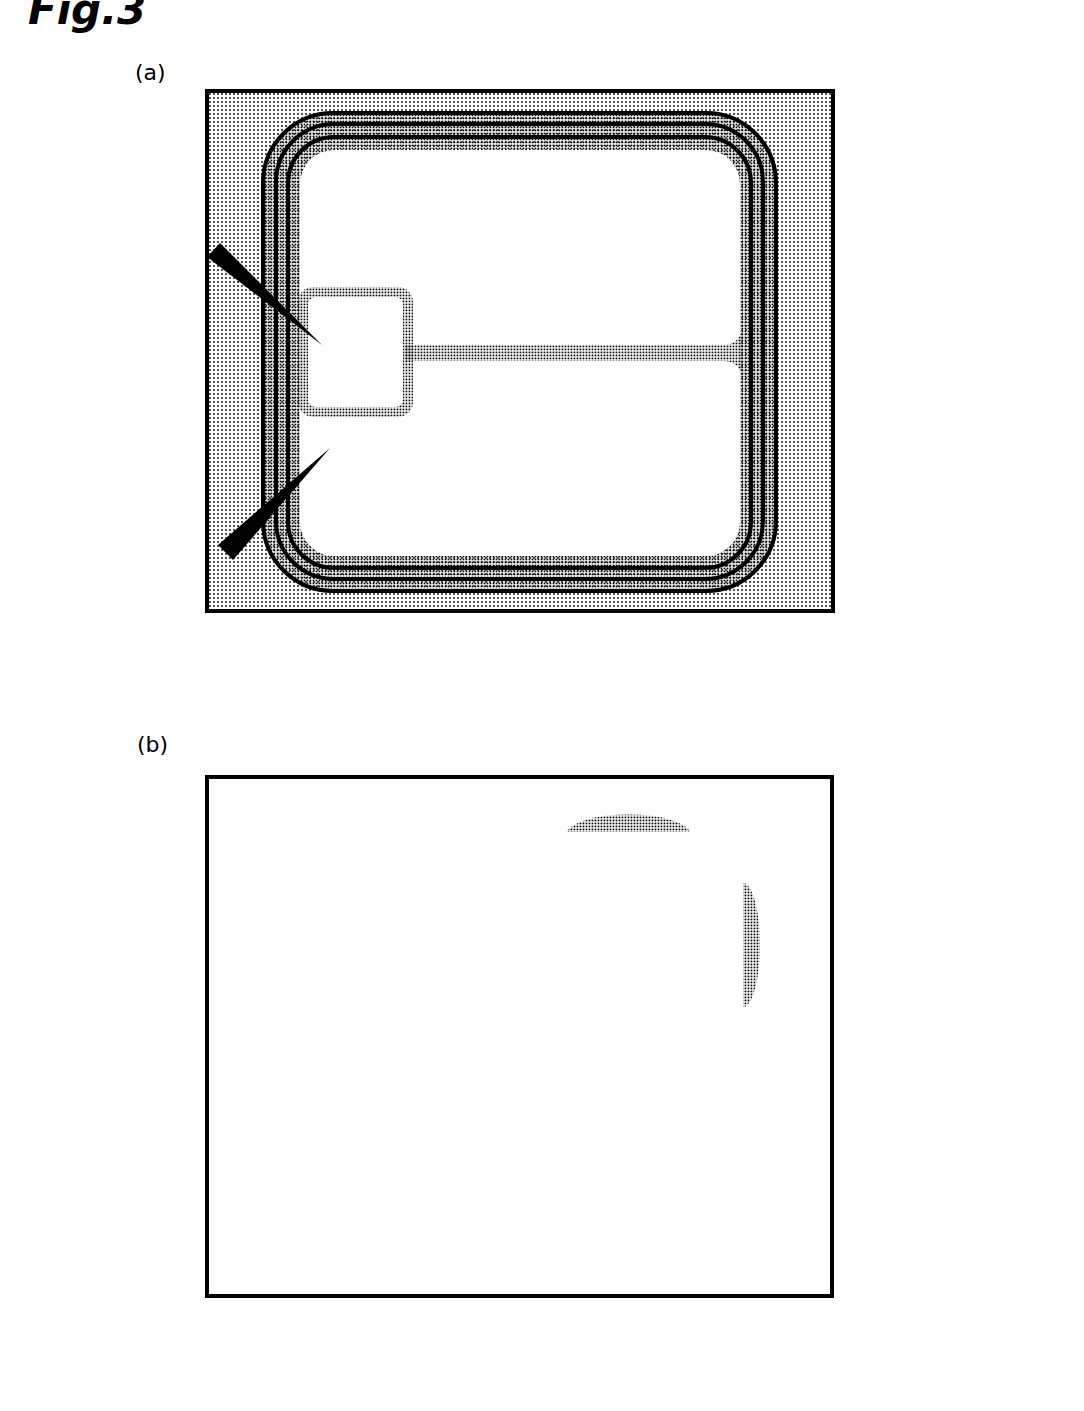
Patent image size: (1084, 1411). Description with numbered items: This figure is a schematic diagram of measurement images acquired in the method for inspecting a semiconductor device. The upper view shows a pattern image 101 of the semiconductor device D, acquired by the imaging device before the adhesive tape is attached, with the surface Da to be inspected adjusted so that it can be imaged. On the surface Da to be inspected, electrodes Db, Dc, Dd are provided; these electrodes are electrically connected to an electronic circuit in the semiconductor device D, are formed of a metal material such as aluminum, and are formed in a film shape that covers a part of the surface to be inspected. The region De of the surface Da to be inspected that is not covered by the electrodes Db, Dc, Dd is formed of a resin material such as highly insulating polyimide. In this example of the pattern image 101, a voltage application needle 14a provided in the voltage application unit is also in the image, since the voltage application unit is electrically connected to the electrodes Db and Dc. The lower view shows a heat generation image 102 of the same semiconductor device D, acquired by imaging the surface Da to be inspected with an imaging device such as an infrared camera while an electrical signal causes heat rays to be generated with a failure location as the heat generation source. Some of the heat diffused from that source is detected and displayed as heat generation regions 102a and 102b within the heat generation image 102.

The pattern image 101 is at (670, 87).
The heat generation image 102 is at (670, 774).
The heat generation region 102a is at (767, 951).
The heat generation region 102b is at (618, 806).
The voltage application needle 14a is at (226, 262).
The semiconductor device D is at (571, 693).
The surface to be inspected Da is at (807, 188).
The electrode Db is at (702, 408).
The electrode Dc is at (327, 369).
The electrode Dd is at (385, 167).
The region De is at (750, 492).